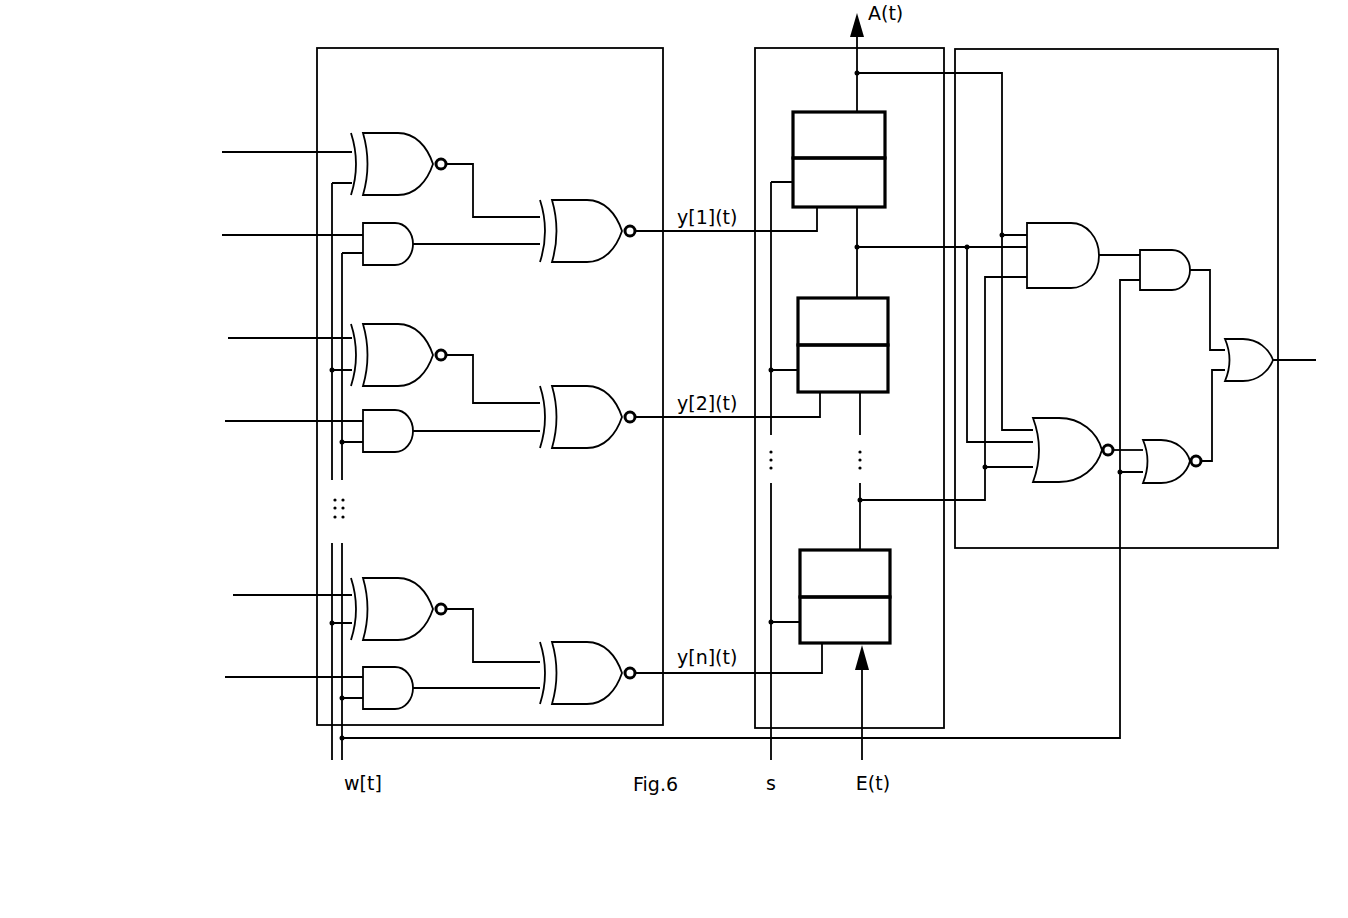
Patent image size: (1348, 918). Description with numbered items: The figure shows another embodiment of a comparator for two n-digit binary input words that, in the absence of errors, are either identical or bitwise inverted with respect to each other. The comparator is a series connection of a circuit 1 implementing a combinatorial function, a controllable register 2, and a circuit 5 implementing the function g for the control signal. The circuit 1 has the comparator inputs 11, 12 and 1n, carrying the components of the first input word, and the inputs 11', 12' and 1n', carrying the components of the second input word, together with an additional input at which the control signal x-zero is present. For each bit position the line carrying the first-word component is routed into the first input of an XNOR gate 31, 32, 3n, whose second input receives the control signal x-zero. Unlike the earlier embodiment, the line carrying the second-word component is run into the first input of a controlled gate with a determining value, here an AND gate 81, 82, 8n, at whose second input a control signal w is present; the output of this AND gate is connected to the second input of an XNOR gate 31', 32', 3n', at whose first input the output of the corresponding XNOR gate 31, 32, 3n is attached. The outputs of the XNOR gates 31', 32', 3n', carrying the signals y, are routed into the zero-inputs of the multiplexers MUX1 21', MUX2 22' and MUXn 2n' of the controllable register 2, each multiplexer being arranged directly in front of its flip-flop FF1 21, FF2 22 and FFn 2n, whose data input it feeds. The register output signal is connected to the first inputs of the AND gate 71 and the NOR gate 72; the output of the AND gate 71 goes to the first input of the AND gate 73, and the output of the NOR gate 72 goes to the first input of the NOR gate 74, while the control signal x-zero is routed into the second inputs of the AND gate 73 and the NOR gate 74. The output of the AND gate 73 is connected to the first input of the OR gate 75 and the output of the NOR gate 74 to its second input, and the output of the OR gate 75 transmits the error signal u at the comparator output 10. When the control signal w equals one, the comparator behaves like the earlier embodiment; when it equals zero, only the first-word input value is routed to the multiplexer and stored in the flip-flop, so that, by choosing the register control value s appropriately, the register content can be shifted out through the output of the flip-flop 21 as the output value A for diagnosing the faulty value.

The circuit for implementing a combinatorial function f1 1 is at (630, 62).
The controllable register 2 is at (787, 62).
The output logic block g_v[0] 5 is at (1148, 62).
The output u(t) 10 is at (1313, 365).
The input 11 is at (274, 120).
The input 11' is at (278, 204).
The input 12 is at (274, 308).
The input 12' is at (278, 390).
The input 1n is at (277, 561).
The input 1n' is at (282, 645).
The flip-flop FF1 21 is at (855, 119).
The multiplexer MUX1 21' is at (858, 169).
The flip-flop FF2 22 is at (859, 306).
The multiplexer MUX2 22' is at (862, 352).
The flip-flop FFn 2n is at (862, 560).
The multiplexer MUXn 2n' is at (866, 607).
The XNOR gate 31 is at (398, 140).
The XNOR gate 31' is at (591, 203).
The XNOR gate 32 is at (398, 330).
The XNOR gate 32' is at (591, 391).
The XNOR gate 3n is at (398, 580).
The XNOR gate 3n' is at (591, 647).
The AND gate 81 is at (403, 242).
The AND gate 82 is at (403, 430).
The AND gate 8n is at (403, 685).
The AND gate 71 is at (1063, 237).
The NOR gate 72 is at (1067, 433).
The AND gate 73 is at (1167, 263).
The NOR gate 74 is at (1168, 448).
The OR gate 75 is at (1233, 348).